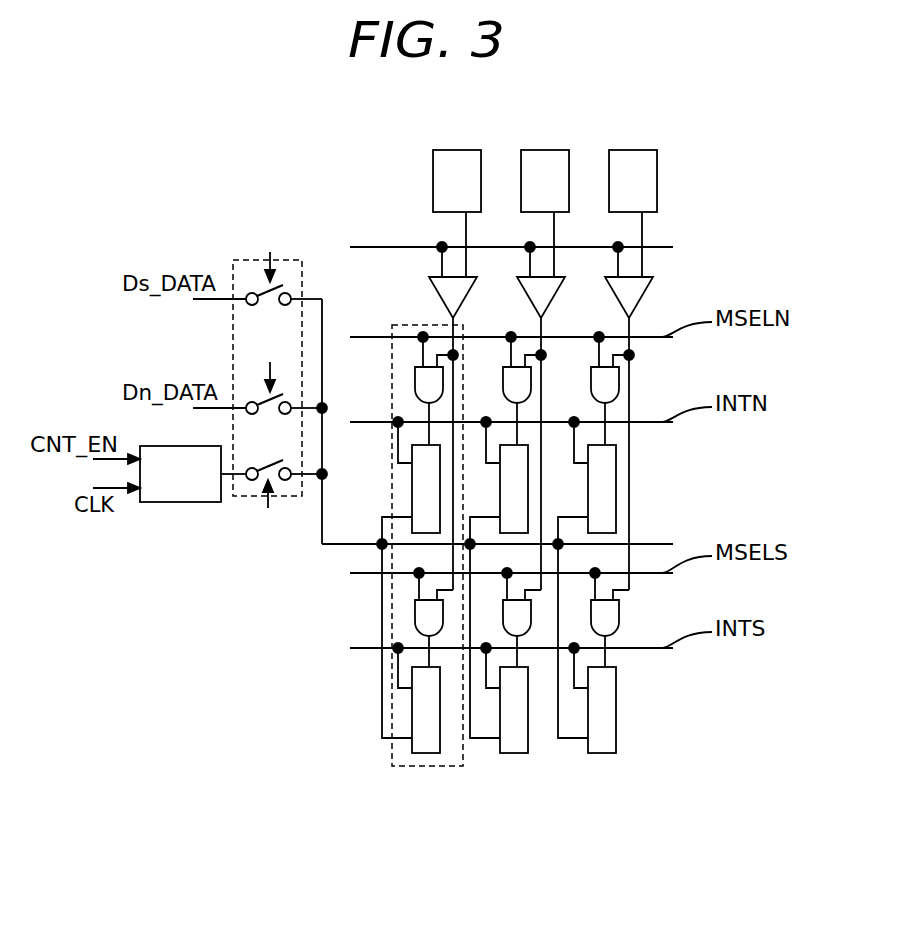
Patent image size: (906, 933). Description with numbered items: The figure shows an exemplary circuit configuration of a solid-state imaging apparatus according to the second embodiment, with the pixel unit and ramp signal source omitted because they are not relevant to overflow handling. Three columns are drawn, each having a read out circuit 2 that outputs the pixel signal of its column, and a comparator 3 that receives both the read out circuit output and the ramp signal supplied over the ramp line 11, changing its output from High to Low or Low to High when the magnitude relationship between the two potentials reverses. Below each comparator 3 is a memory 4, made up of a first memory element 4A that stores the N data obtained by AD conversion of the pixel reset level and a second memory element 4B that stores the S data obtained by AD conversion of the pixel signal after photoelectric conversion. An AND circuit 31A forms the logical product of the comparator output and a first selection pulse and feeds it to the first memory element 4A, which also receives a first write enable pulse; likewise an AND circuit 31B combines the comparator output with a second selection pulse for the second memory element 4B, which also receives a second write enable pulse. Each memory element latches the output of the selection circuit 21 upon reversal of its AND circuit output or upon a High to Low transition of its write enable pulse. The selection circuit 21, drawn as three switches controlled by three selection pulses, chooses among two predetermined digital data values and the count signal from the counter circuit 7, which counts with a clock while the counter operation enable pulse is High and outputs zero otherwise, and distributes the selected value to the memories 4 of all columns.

The read out circuit 2 is at (441, 178).
The comparator 3 is at (447, 292).
The memory 4 is at (420, 767).
The first memory element 4A is at (421, 484).
The second memory element 4B is at (421, 704).
The counter circuit 7 is at (180, 494).
The ramp line 11 is at (373, 246).
The selection circuit 21 is at (242, 262).
The AND circuit 31A is at (425, 382).
The AND circuit 31B is at (421, 618).